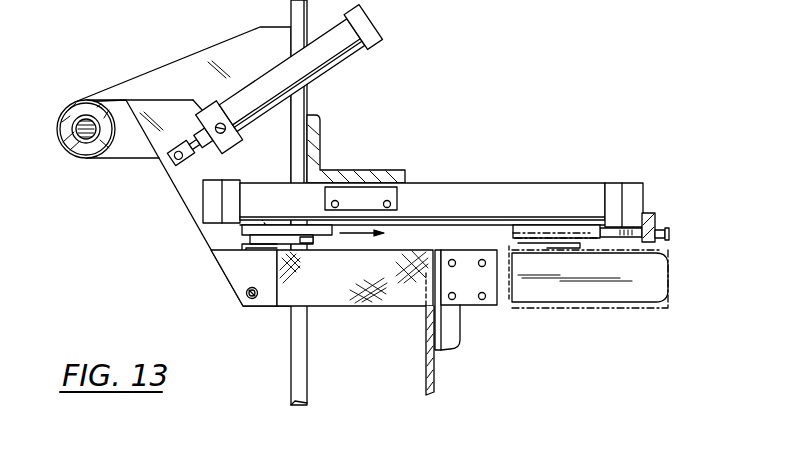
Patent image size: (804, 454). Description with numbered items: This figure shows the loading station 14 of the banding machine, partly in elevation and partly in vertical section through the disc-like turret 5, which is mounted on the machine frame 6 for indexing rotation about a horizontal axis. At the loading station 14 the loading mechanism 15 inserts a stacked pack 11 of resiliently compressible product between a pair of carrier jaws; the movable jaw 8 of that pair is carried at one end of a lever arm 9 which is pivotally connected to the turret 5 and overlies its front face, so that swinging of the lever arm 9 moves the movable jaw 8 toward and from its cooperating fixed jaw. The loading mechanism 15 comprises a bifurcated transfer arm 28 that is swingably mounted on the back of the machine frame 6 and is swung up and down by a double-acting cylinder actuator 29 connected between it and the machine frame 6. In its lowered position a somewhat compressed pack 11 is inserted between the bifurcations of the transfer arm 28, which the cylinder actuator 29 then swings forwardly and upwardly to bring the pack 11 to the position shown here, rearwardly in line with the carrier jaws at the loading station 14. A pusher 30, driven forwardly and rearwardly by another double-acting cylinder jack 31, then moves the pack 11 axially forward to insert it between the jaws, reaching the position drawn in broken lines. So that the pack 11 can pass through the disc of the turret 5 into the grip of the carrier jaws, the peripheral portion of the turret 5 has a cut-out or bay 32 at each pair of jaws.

The turret 5 is at (425, 370).
The machine frame 6 is at (290, 377).
The movable jaw 8 is at (660, 287).
The lever arm 9 is at (460, 338).
The pack 11 is at (363, 308).
The loading station 14 is at (698, 256).
The loading mechanism 15 is at (150, 57).
The transfer arm 28 is at (270, 308).
The cylinder actuator 29 is at (276, 72).
The pusher 30 is at (240, 253).
The cylinder jack 31 is at (461, 190).
The bay 32 is at (433, 315).